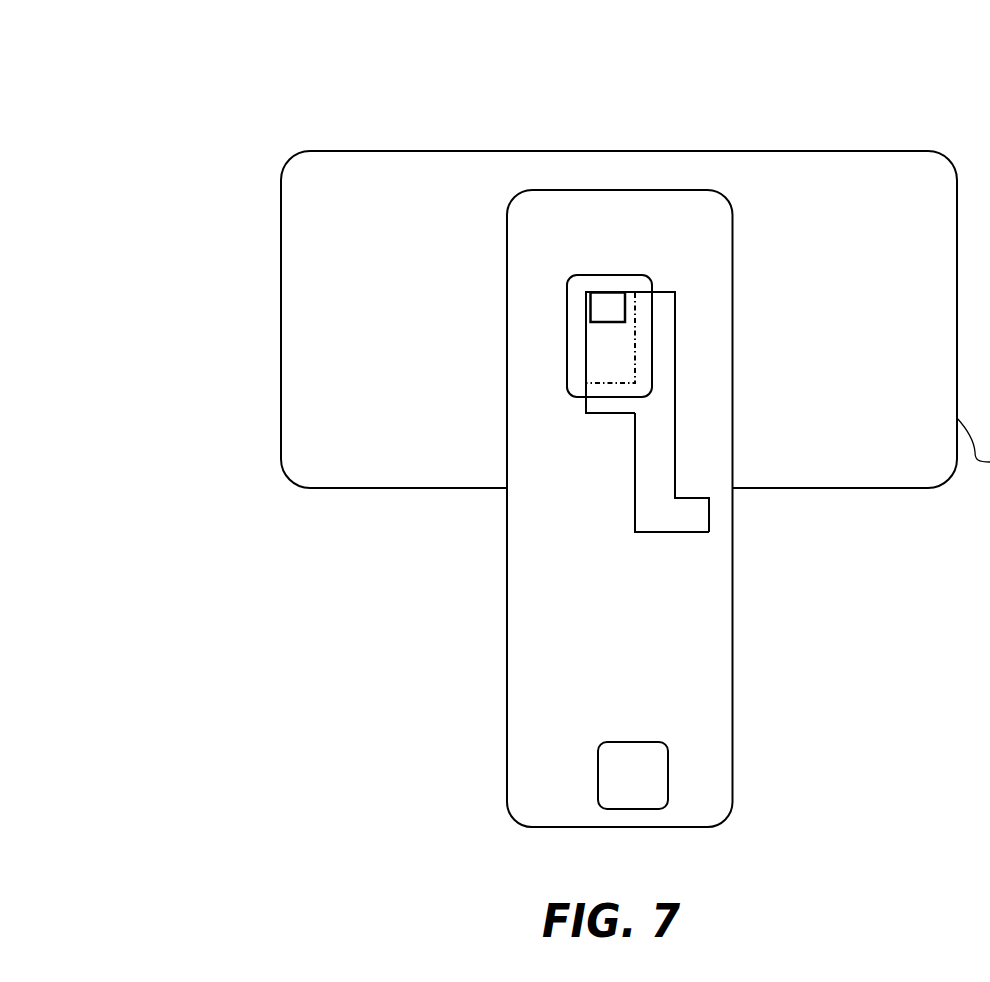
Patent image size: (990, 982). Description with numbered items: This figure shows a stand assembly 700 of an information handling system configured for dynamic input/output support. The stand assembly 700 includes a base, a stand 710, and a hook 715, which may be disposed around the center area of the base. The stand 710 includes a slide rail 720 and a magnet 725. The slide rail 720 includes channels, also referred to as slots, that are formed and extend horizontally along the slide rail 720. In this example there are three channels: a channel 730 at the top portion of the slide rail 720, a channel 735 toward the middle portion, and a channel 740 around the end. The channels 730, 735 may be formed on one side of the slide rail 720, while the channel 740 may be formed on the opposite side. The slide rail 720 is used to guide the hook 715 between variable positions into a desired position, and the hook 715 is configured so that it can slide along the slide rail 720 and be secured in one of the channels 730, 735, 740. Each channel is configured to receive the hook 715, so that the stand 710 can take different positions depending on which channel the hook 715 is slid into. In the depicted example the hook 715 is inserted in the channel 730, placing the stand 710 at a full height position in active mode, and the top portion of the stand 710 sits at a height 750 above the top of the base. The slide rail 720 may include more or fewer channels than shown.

The stand assembly 700 is at (203, 69).
The stand 710 is at (732, 623).
The hook 715 is at (567, 397).
The slide rail 720 is at (675, 390).
The magnet 725 is at (648, 810).
The channel 730 is at (600, 325).
The channel 735 is at (600, 415).
The channel 740 is at (632, 515).
The height 750 is at (619, 136).